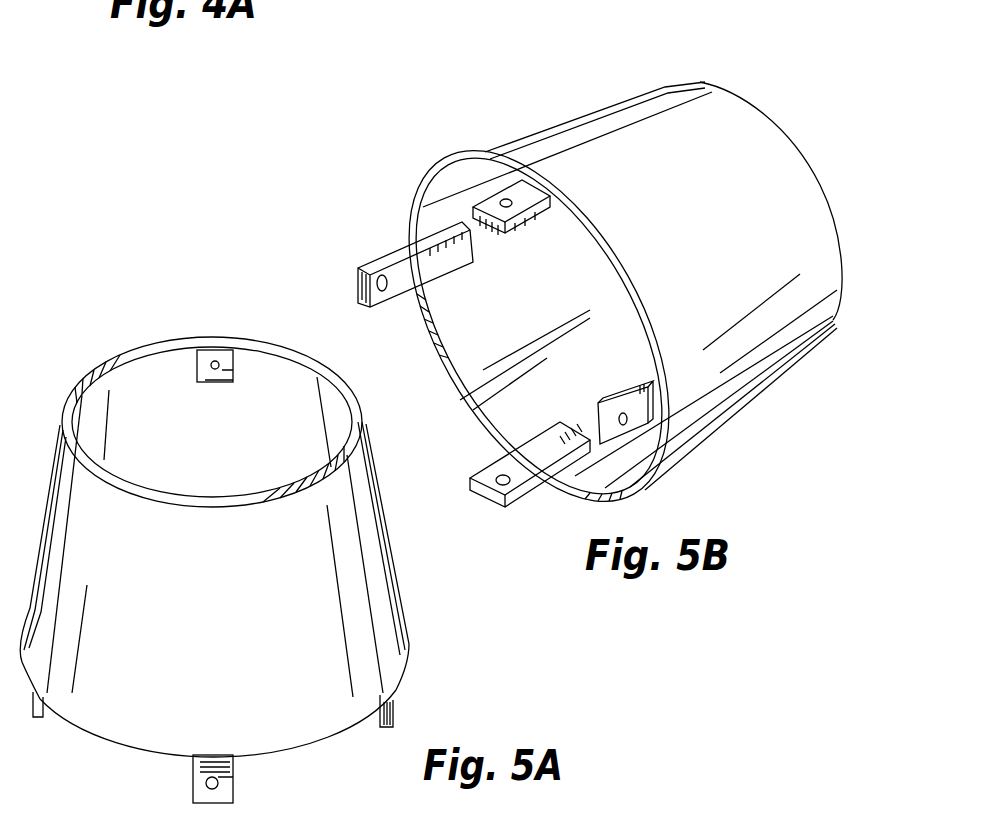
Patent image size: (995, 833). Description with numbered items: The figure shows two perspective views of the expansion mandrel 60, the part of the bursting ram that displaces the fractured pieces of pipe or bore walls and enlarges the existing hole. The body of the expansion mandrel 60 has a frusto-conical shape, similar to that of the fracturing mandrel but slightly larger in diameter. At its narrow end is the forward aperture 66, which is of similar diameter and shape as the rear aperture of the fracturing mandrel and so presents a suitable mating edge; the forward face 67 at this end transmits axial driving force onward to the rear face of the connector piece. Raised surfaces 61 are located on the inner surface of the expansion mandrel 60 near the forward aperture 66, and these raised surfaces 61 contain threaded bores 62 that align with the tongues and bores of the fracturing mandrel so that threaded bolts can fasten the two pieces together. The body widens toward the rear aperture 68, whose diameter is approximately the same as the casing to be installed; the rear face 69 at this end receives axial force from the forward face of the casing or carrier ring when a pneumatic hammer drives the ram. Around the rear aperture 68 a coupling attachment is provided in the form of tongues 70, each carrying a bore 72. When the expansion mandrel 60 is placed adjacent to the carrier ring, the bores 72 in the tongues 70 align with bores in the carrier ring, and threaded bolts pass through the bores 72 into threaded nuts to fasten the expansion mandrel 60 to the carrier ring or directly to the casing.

In FIG. 5A, the expansion mandrel 60 is at (190, 610).
In FIG. 5B, the expansion mandrel 60 is at (710, 217).
In FIG. 5A, the raised surfaces 61 is at (234, 363).
In FIG. 5B, the raised surfaces 61 is at (318, 302).
In FIG. 5A, the threaded bores 62 is at (216, 362).
In FIG. 5A, the forward aperture 66 is at (127, 402).
In FIG. 5B, the forward aperture 66 is at (757, 103).
In FIG. 5A, the forward face 67 is at (150, 355).
In FIG. 5B, the forward face 67 is at (538, 326).
In FIG. 5A, the rear aperture 68 is at (287, 750).
In FIG. 5B, the rear aperture 68 is at (508, 343).
In FIG. 5B, the rear face 69 is at (425, 348).
In FIG. 5A, the tongues 70 is at (38, 698).
In FIG. 5B, the tongues 70 is at (508, 233).
In FIG. 5A, the bores 72 is at (214, 777).
In FIG. 5B, the bores 72 is at (503, 198).